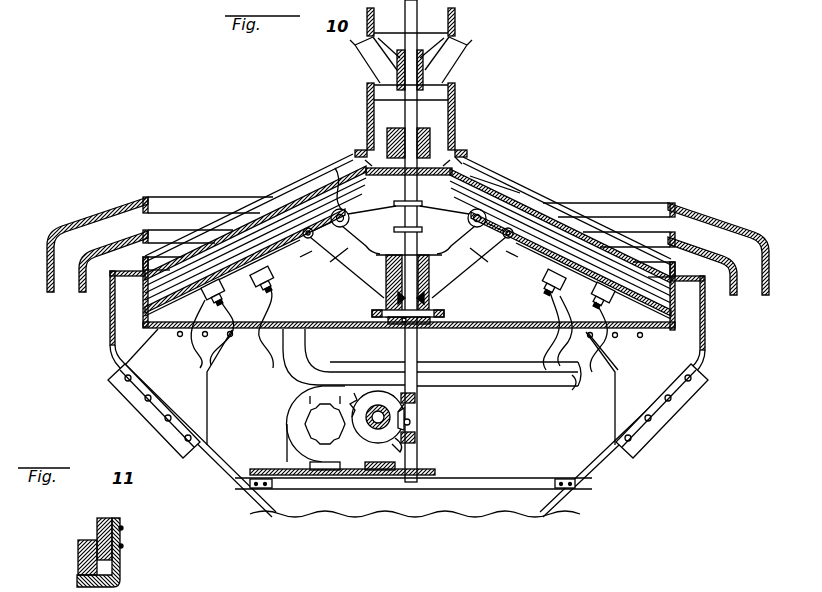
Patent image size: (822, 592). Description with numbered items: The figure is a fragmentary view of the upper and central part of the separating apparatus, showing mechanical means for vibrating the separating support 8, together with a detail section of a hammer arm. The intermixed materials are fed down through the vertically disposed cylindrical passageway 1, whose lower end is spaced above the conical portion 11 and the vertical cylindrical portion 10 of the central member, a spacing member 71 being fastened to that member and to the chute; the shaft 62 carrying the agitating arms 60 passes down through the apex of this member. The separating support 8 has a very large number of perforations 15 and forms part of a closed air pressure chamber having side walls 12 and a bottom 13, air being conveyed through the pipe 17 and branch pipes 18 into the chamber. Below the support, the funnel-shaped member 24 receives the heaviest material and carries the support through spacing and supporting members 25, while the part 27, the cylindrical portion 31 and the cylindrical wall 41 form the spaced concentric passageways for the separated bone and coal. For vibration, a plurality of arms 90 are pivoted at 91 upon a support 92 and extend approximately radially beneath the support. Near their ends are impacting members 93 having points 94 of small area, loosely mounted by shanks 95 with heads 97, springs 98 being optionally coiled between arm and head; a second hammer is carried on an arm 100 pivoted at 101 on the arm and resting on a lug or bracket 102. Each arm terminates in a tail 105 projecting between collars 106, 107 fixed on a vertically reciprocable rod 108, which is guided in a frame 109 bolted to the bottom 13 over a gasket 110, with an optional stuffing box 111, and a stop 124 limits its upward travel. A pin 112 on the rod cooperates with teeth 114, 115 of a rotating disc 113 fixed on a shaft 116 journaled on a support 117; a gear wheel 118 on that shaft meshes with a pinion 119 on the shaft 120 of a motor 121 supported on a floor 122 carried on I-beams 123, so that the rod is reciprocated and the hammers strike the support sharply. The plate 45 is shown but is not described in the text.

In FIG. 10, the passageway 1 is at (456, 16).
In FIG. 10, the spacing member 71 is at (366, 58).
In FIG. 10, the top or conical portion 11 is at (440, 52).
In FIG. 10, the shaft 62 is at (406, 117).
In FIG. 10, the vertical cylindrical portion 10 is at (437, 118).
In FIG. 10, the collar 106 is at (462, 154).
In FIG. 10, the arms 60 is at (317, 176).
In FIG. 10, the tail 105 is at (455, 170).
In FIG. 10, the separating support 8 is at (300, 202).
In FIG. 10, the pivot 101 is at (308, 198).
In FIG. 10, the perforations 15 is at (276, 212).
In FIG. 10, the arms 90 is at (258, 230).
In FIG. 11, the arms 90 is at (122, 543).
In FIG. 10, the ends or points 94 is at (244, 243).
In FIG. 10, the impacting members 93 is at (224, 260).
In FIG. 10, the pivot 91 is at (520, 188).
In FIG. 10, the support 92 is at (488, 212).
In FIG. 10, the collar 107 is at (520, 190).
In FIG. 10, the frame 109 is at (357, 277).
In FIG. 10, the stuffing box 111 is at (430, 297).
In FIG. 10, the stop 124 is at (432, 332).
In FIG. 10, the rod 108 is at (417, 358).
In FIG. 10, the side walls 12 is at (143, 304).
In FIG. 10, the cylindrical wall 41 is at (110, 208).
In FIG. 10, the cylindrical portion 31 is at (92, 247).
In FIG. 10, the part 27 is at (110, 327).
In FIG. 10, the spacing and supporting members 25 is at (150, 362).
In FIG. 10, the side plate 45 is at (128, 396).
In FIG. 10, the funnel-shaped member 24 is at (158, 427).
In FIG. 10, the shanks 95 is at (201, 295).
In FIG. 10, the heads 97 is at (389, 329).
In FIG. 10, the springs 98 is at (416, 321).
In FIG. 10, the arm 100 is at (429, 261).
In FIG. 11, the arm 100 is at (78, 555).
In FIG. 10, the lug or bracket 102 is at (423, 261).
In FIG. 11, the lug or bracket 102 is at (122, 577).
In FIG. 10, the bottom 13 is at (272, 357).
In FIG. 10, the gasket 110 is at (370, 339).
In FIG. 10, the branch pipes 18 is at (486, 377).
In FIG. 10, the pipe 17 is at (586, 374).
In FIG. 10, the motor 121 is at (294, 396).
In FIG. 10, the pinion 119 is at (314, 423).
In FIG. 10, the gear wheel 118 is at (350, 411).
In FIG. 10, the shaft 120 is at (298, 436).
In FIG. 10, the tooth 115 is at (338, 470).
In FIG. 10, the shaft 116 is at (378, 470).
In FIG. 10, the support 117 is at (440, 466).
In FIG. 10, the rotating disc 113 is at (418, 434).
In FIG. 10, the pin 112 is at (412, 421).
In FIG. 10, the tooth 114 is at (405, 410).
In FIG. 10, the I-beams 123 is at (314, 492).
In FIG. 10, the floor 122 is at (266, 511).